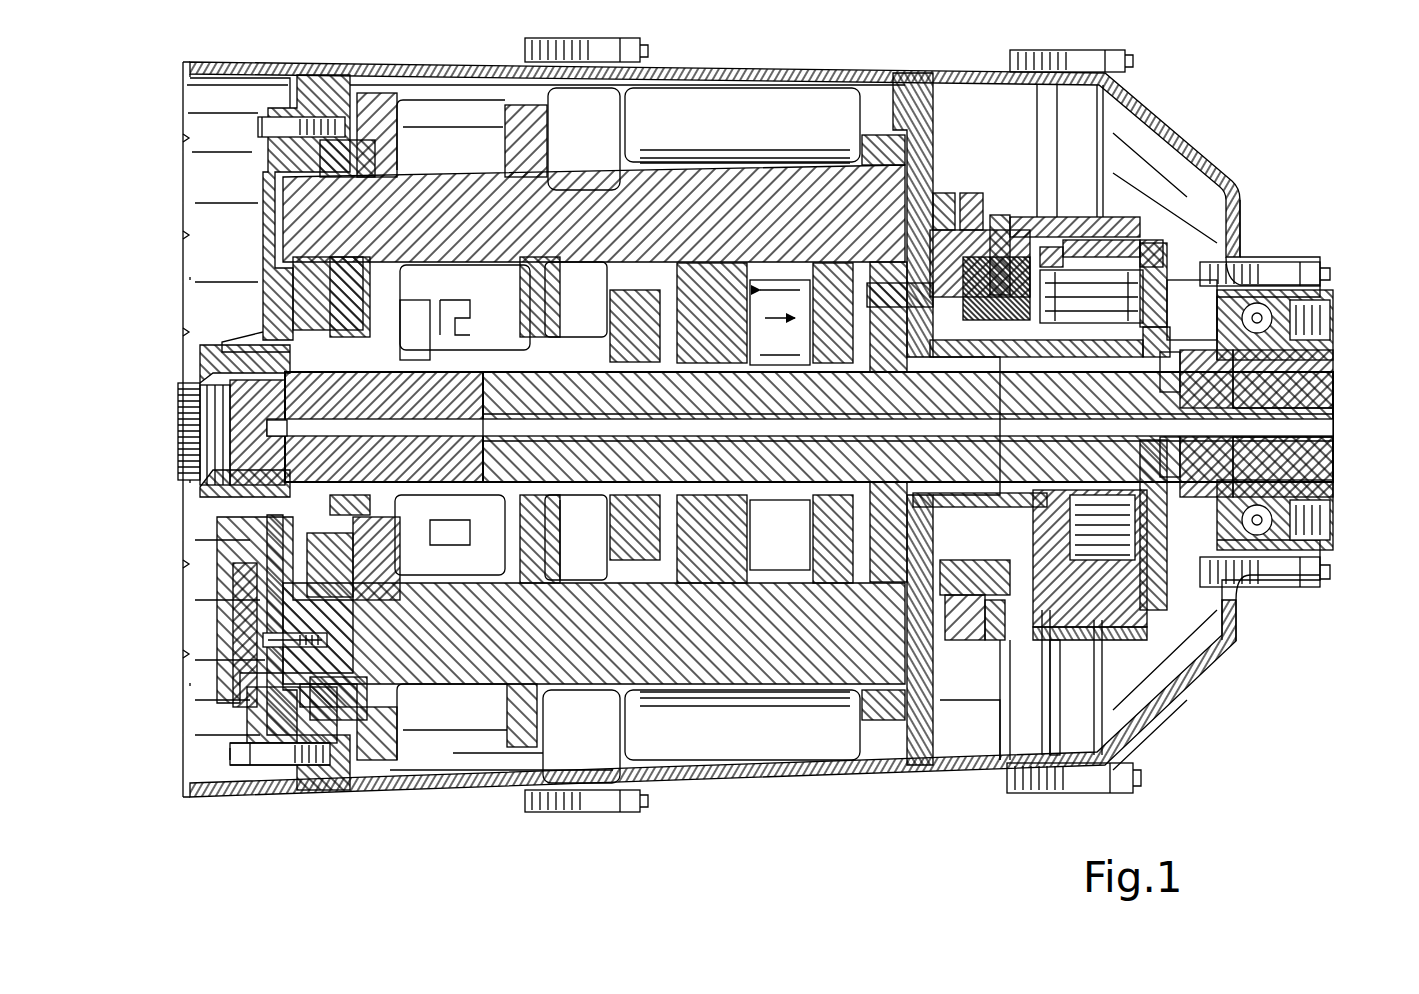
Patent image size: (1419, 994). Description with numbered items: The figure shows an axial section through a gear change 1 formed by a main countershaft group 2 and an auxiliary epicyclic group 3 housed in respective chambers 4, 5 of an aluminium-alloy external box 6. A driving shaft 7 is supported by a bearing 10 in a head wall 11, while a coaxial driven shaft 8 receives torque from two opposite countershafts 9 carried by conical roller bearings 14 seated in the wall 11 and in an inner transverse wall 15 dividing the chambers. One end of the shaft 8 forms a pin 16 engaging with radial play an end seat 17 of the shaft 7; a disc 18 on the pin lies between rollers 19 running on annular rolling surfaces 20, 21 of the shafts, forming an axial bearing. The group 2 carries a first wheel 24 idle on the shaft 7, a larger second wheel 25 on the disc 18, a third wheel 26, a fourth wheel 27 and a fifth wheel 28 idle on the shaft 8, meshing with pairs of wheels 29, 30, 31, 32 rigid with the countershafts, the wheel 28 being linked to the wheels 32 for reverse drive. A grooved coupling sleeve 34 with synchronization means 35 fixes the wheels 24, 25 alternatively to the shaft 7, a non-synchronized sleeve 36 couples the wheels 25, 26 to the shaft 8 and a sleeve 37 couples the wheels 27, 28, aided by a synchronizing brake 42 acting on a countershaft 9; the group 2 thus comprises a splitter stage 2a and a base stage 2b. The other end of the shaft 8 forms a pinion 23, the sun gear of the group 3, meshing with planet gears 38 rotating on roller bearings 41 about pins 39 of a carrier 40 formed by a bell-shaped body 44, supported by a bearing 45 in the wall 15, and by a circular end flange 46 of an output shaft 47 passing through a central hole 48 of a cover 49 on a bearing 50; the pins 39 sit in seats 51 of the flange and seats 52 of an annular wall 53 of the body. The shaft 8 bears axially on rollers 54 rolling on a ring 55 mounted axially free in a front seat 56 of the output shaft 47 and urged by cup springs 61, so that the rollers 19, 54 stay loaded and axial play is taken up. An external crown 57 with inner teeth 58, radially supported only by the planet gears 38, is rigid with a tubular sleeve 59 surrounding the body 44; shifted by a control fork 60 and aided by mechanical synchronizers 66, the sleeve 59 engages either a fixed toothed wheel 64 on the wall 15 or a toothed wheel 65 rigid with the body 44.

The gear change 1 is at (712, 800).
The main countershaft group 2 is at (590, 778).
The first stage (splitter) 2a is at (446, 712).
The base stage 2b is at (700, 725).
The auxiliary epicyclic group 3 is at (1135, 718).
The chamber 4 is at (410, 772).
The chamber 5 is at (985, 748).
The external box 6 is at (340, 795).
The driving shaft 7 is at (180, 460).
The driven shaft 8 is at (778, 368).
The countershafts 9 is at (585, 190).
The bearing 10 is at (262, 345).
The head wall 11 is at (300, 315).
The conical roller bearings 14 is at (395, 170).
The inner transverse wall 15 is at (935, 200).
The pin 16 is at (478, 445).
The end seat 17 is at (482, 420).
The disc 18 is at (512, 322).
The rollers 19 is at (516, 560).
The annular rolling surface 20 is at (500, 328).
The annular rolling surface 21 is at (598, 312).
The pinion (sun gear) 23 is at (1140, 518).
The first wheel 24 is at (400, 560).
The second wheel 25 is at (562, 505).
The third wheel 26 is at (595, 530).
The fourth wheel 27 is at (735, 540).
The fifth wheel 28 is at (815, 545).
The wheels 29 is at (392, 135).
The wheels 30 is at (508, 140).
The wheels 31 is at (672, 150).
The wheels 32 is at (740, 160).
The grooved coupling sleeve 34 is at (420, 540).
The synchronization means 35 is at (410, 320).
The non-synchronized coupling sleeve 36 is at (580, 352).
The sleeve 37 is at (778, 485).
The planet gears 38 is at (1130, 225).
The pins 39 is at (1082, 285).
The carrier 40 is at (1230, 265).
The roller bearings 41 is at (1160, 240).
The synchronizing brake 42 is at (250, 690).
The bell-shaped body 44 is at (1003, 240).
The bearing 45 is at (975, 195).
The circular end flange 46 is at (1147, 618).
The output shaft 47 is at (1335, 385).
The central hole 48 is at (1318, 288).
The cover 49 is at (1262, 272).
The bearing 50 is at (1330, 322).
The seats 51 is at (1150, 292).
The seats 52 is at (1005, 215).
The annular wall 53 is at (1012, 660).
The rollers 54 is at (1178, 372).
The ring 55 is at (1210, 396).
The front seat 56 is at (1178, 482).
The external crown 57 is at (1050, 220).
The inner teeth 58 is at (1058, 640).
The tubular sleeve 59 is at (990, 598).
The control fork 60 is at (950, 195).
The cup springs 61 is at (1185, 462).
The fixed toothed wheel 64 is at (958, 642).
The toothed wheel 65 is at (995, 640).
The mechanical synchronizers 66 is at (990, 480).